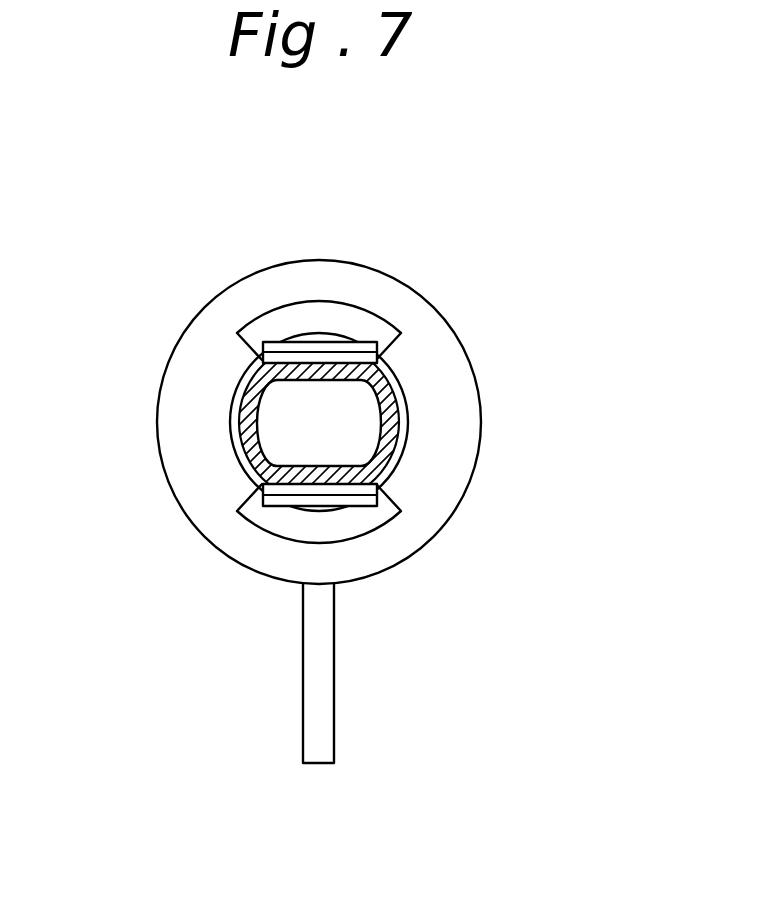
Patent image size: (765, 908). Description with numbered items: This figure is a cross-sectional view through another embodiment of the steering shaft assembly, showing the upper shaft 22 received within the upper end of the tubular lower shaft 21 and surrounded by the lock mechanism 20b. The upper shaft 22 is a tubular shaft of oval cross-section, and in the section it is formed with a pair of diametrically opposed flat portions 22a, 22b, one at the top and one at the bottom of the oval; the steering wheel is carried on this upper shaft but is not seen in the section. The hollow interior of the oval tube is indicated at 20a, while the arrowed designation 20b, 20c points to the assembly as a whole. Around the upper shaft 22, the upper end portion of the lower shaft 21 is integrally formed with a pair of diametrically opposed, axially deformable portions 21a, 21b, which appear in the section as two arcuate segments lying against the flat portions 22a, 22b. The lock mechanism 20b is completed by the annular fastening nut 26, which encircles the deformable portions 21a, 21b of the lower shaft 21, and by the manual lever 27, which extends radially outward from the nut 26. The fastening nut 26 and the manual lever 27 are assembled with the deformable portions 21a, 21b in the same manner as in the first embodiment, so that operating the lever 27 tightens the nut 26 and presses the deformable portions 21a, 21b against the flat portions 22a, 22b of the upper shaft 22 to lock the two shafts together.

The bore / inner hole of cylindrical member 20a is at (240, 458).
The lock mechanism 20b is at (330, 449).
The electromagnetic actuator assembly 20c is at (492, 188).
The lower shaft 21 is at (397, 462).
The deformable portion 21a is at (340, 322).
The deformable portion 21b is at (360, 523).
The upper shaft 22 is at (390, 417).
The flat portion 22a is at (291, 361).
The flat portion 22b is at (288, 487).
The annular fastening nut 26 is at (180, 377).
The manual lever 27 is at (310, 680).